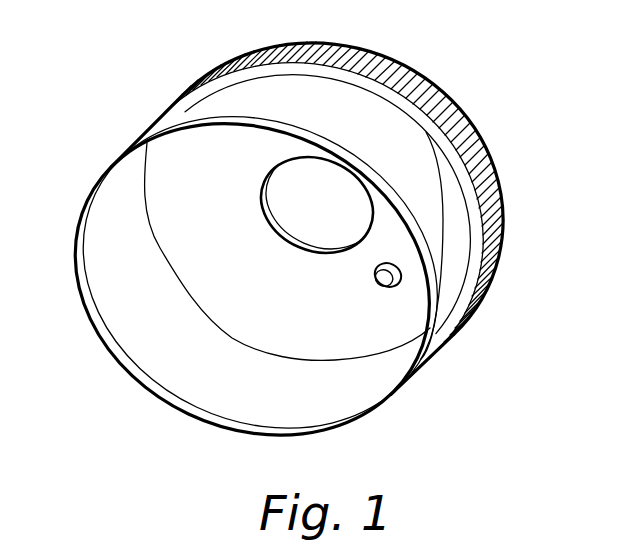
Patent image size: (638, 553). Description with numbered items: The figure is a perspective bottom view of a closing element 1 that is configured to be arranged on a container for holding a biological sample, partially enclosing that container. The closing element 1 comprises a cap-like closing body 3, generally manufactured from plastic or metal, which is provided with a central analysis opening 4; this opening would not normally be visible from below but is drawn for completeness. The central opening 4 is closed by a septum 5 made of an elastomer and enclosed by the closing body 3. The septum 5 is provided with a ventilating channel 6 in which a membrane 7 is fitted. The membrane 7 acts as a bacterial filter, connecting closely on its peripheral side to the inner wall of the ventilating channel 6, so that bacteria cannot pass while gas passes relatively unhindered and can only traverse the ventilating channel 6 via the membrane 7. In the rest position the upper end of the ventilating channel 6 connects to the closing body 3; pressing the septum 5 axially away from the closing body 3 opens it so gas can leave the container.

The closing element 1 is at (89, 118).
The closing body 3 is at (452, 222).
The central opening 4 is at (248, 208).
The septum 5 is at (222, 275).
The ventilating channel 6 is at (360, 280).
The membrane 7 is at (385, 287).